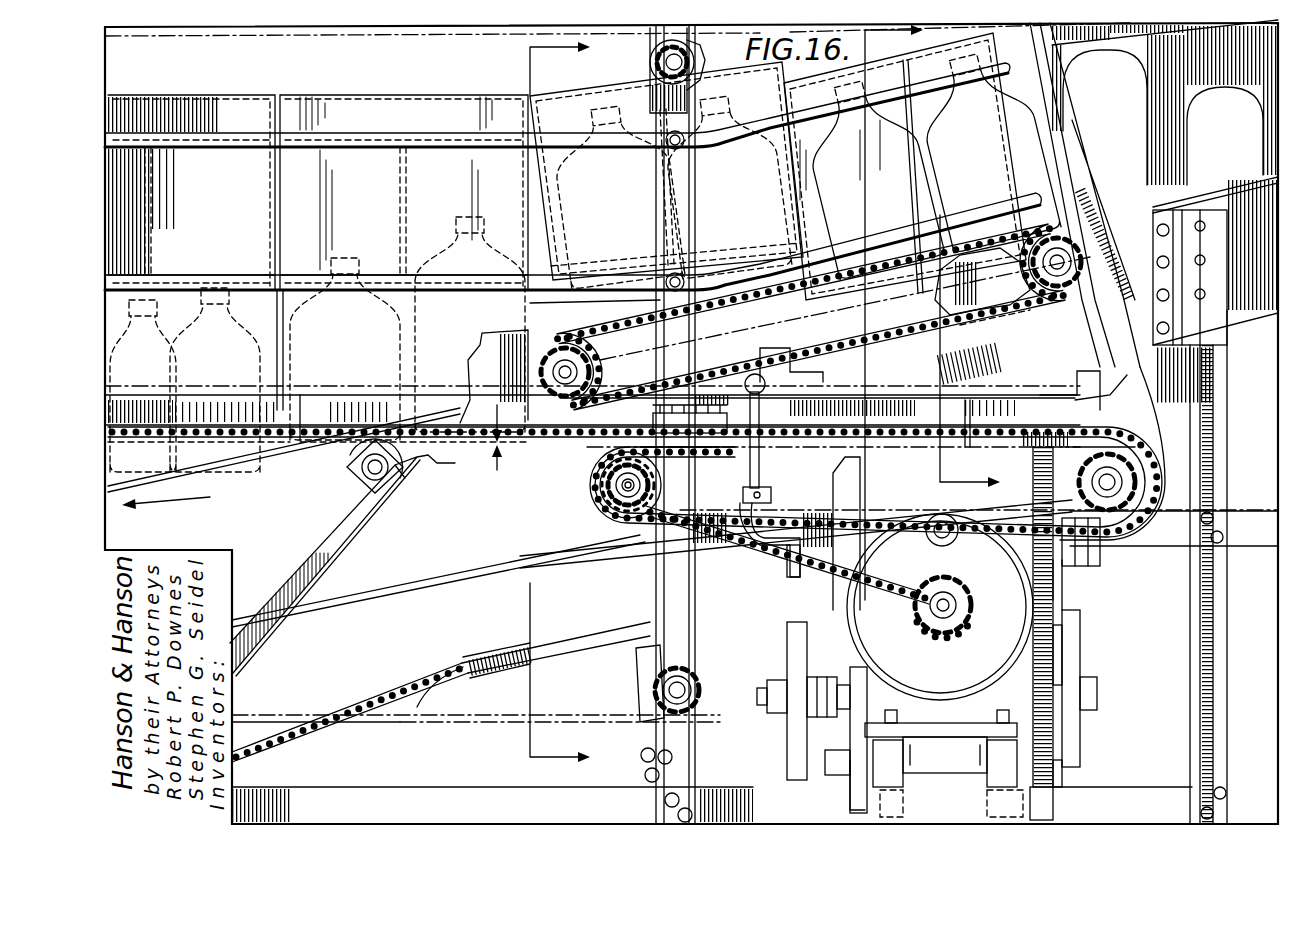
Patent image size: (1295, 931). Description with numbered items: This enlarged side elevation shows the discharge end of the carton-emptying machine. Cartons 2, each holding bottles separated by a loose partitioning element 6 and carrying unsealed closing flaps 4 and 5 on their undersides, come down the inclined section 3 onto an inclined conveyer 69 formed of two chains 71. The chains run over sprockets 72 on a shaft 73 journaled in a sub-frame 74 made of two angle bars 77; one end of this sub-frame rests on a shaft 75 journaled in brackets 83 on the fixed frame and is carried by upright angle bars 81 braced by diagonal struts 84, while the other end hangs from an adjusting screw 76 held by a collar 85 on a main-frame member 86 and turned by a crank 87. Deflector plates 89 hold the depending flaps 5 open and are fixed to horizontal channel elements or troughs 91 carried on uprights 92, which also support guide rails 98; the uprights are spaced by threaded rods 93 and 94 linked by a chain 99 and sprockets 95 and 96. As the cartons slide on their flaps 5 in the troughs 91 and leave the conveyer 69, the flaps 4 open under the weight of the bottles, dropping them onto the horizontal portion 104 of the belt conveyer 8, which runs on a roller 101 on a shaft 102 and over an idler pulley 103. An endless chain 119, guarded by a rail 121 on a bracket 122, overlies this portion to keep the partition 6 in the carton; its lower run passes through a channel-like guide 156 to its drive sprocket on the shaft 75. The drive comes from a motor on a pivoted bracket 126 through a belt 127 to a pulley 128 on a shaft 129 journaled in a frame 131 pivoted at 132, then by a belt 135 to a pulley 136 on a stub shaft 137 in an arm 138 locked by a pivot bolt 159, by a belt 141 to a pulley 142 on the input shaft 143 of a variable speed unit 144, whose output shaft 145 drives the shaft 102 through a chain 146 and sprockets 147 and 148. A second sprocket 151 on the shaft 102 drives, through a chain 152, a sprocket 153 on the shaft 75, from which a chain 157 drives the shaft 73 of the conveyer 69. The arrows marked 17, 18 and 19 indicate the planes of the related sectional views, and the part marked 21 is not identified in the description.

The cartons 2 is at (160, 97).
The inclined section 3 is at (1230, 395).
The closing flaps 4 is at (612, 305).
The closing flaps 5 is at (1085, 250).
The partitioning element 6 is at (150, 226).
The belt conveyer 8 is at (265, 463).
The section line 17- 17 is at (543, 405).
The section line 18- 18 is at (917, 312).
The section line 19- 19 is at (513, 435).
The side wall 21 is at (1135, 127).
The conveyer 69 is at (1100, 232).
The chains 71 is at (550, 350).
The sprockets 72 is at (982, 281).
The shaft 73 is at (1035, 270).
The sub-frame 74 is at (1015, 348).
The shaft 75 is at (1110, 483).
The adjusting screw 76 is at (760, 468).
The angle bars 77 is at (600, 368).
The upright angle bars 81 is at (1045, 487).
The brackets 83 is at (1165, 535).
The struts 84 is at (992, 442).
The collar 85 is at (770, 495).
The member 86 is at (740, 560).
The crank 87 is at (795, 556).
The deflector plates 89 is at (1142, 320).
The channel elements 91 is at (350, 395).
The uprights 92 is at (682, 203).
The threaded rod 93 is at (697, 52).
The threaded rod 94 is at (692, 692).
The sprocket 95 is at (655, 58).
The sprocket 96 is at (645, 688).
The guide rails 98 is at (250, 147).
The chain 99 is at (345, 35).
The roller 101 is at (597, 520).
The shaft 102 is at (628, 488).
The idler pulley 103 is at (357, 482).
The horizontal portion 104 is at (475, 455).
The endless chain 119 is at (135, 438).
The guard rail 121 is at (245, 437).
The bracket 122 is at (733, 455).
The bracket 126 is at (957, 763).
The belt 127 is at (1075, 672).
The pulley 128 is at (1085, 752).
The shaft 129 is at (1097, 700).
The frame 131 is at (852, 492).
The pivot 132 is at (955, 800).
The belt 135 is at (795, 722).
The pulley 136 is at (830, 660).
The stub shaft 137 is at (775, 698).
The arm 138 is at (850, 772).
The belt 141 is at (790, 642).
The pulley 142 is at (787, 662).
The input shaft 143 is at (790, 720).
The variable speed unit 144 is at (955, 681).
The output shaft 145 is at (950, 618).
The chain 146 is at (650, 512).
The sprocket 147 is at (915, 632).
The sprocket 148 is at (605, 507).
The second sprocket 151 is at (618, 487).
The chain 152 is at (1135, 446).
The sprocket 153 is at (1080, 517).
The channel-like guide 156 is at (510, 655).
The chain 157 is at (1128, 398).
The pivot bolt 159 is at (830, 768).